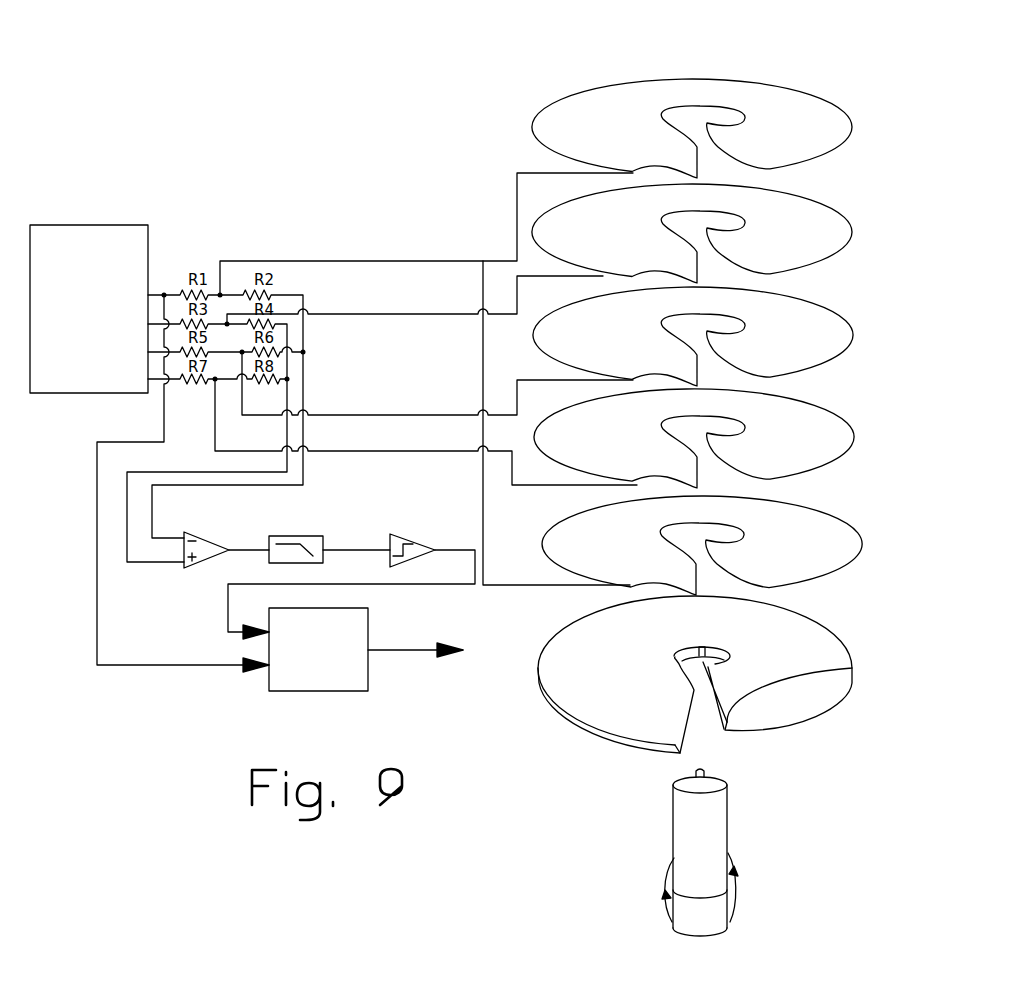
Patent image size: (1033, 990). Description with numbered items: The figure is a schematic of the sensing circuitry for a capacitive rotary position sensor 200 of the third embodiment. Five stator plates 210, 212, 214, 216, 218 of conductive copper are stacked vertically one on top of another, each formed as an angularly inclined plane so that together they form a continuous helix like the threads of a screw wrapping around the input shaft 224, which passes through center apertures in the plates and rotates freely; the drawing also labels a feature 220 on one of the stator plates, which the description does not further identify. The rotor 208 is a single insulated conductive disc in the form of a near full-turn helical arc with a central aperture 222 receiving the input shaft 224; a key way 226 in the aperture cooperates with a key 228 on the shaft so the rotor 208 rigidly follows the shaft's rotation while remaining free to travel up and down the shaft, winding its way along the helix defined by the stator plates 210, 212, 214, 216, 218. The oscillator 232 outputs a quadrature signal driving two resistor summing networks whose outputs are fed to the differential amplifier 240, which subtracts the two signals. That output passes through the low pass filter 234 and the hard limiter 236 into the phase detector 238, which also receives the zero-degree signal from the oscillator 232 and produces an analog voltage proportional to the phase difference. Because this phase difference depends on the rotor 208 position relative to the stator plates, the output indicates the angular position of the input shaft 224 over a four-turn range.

The sensor 200 is at (428, 160).
The rotor 208 is at (807, 615).
The stator plate 210 is at (807, 505).
The stator plate 212 is at (807, 403).
The stator plate 214 is at (807, 298).
The stator plate 216 is at (807, 195).
The stator plate 218 is at (807, 93).
The spiral slot 220 is at (661, 223).
The central aperture 222 is at (692, 651).
The input shaft 224 is at (728, 812).
The key way 226 is at (703, 643).
The key 228 is at (705, 769).
The oscillator 232 is at (148, 225).
The low pass filter 234 is at (296, 565).
The hard limiter 236 is at (405, 565).
The phase detector 238 is at (368, 627).
The differential amplifier 240 is at (208, 562).